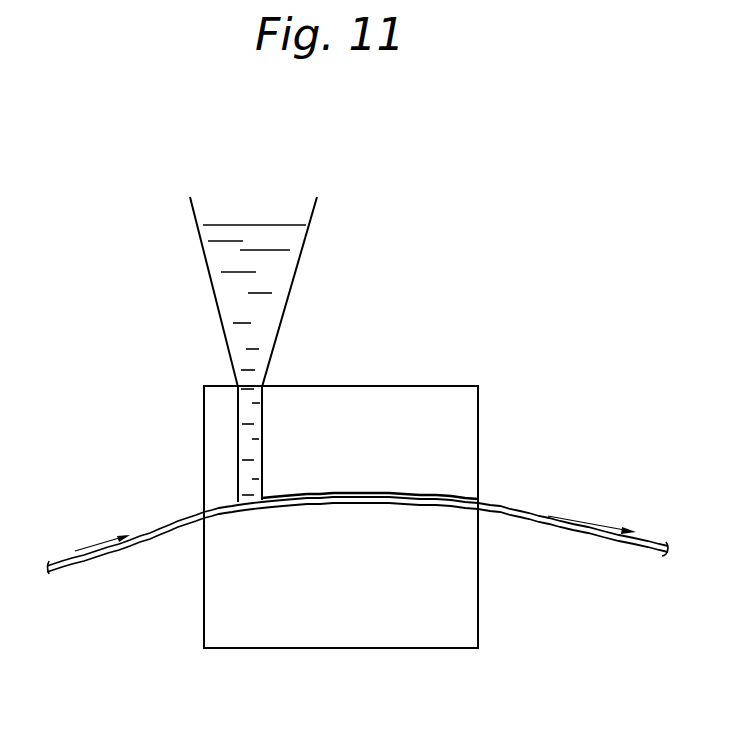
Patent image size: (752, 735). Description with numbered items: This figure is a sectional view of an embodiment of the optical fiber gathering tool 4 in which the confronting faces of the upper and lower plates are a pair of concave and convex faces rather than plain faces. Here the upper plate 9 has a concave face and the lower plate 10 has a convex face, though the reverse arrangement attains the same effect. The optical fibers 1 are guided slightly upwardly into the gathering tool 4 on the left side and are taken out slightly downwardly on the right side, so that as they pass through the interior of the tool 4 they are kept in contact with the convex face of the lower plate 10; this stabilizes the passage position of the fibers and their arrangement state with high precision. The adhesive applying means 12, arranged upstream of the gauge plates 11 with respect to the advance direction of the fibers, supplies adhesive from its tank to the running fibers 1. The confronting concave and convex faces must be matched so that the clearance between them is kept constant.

The optical fibers 1 is at (100, 556).
The gathering tool 4 is at (402, 372).
The upper plate 9 is at (479, 441).
The lower plate 10 is at (478, 625).
The gauge plates 11 is at (330, 491).
The adhesive applying means 12 is at (297, 270).